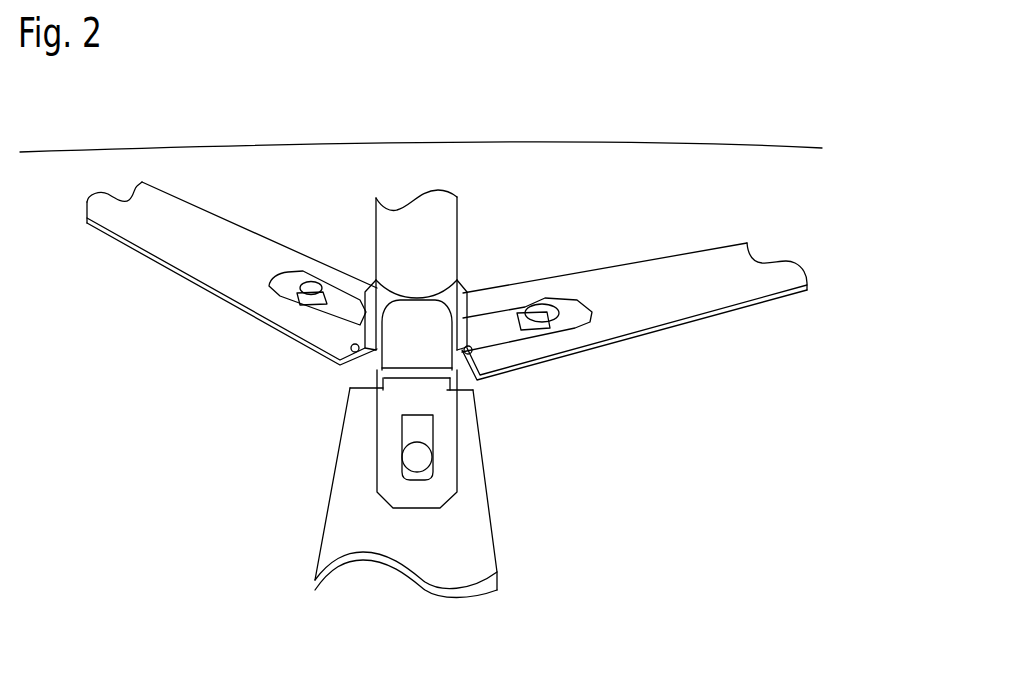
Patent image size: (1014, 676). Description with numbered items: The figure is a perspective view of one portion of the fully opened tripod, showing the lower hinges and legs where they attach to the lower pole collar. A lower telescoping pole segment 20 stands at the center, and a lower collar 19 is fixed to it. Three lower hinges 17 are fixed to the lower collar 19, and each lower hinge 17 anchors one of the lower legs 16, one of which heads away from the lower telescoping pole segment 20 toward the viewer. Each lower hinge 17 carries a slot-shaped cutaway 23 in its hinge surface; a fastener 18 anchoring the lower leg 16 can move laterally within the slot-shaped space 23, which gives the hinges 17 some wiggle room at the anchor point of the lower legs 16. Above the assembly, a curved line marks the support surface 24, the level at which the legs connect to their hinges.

The lower leg 16 is at (190, 248).
The lower hinge 17 is at (303, 305).
The fastener 18 is at (312, 284).
The lower collar 19 is at (452, 297).
The lower telescoping pole segment 20 is at (428, 261).
The slot-shaped cutaway 23 is at (410, 430).
The support surface 24 is at (581, 146).